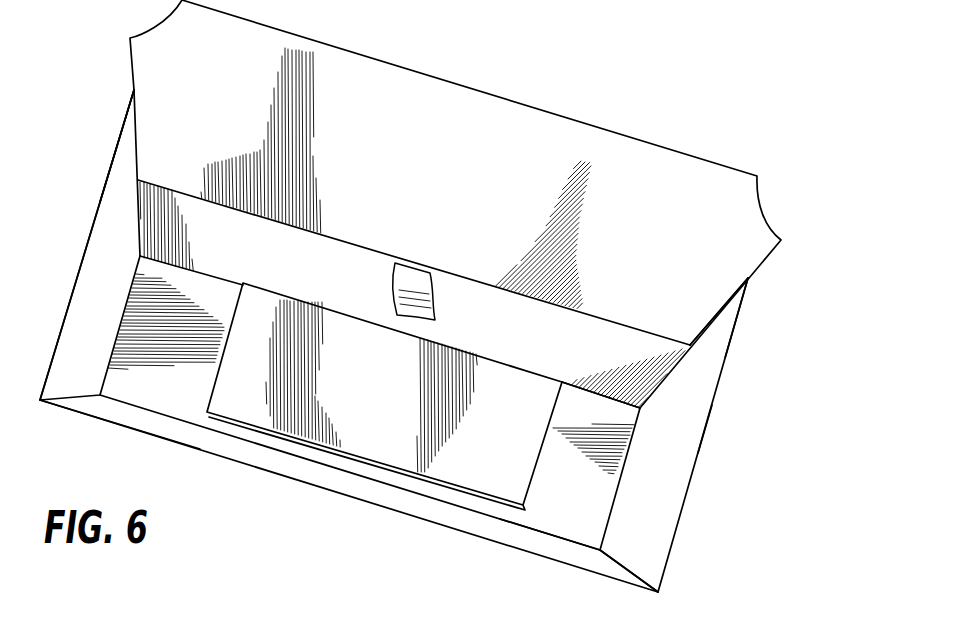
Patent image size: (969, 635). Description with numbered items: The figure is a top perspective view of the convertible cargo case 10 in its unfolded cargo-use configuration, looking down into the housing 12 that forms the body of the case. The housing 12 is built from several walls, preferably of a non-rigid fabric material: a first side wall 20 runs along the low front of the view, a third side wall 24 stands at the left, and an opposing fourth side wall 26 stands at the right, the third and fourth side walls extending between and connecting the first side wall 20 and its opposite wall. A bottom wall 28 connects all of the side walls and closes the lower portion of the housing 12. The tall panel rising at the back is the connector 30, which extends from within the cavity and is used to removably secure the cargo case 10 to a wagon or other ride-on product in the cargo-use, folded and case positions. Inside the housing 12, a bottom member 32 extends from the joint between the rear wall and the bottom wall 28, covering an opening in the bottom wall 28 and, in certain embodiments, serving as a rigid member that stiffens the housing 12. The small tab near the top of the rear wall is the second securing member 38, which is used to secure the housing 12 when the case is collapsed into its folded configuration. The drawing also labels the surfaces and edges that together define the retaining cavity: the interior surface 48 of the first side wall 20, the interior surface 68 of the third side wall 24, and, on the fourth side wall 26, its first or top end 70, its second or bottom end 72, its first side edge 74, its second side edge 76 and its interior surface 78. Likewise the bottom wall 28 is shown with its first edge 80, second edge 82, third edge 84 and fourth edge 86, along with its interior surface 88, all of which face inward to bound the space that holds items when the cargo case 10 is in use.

The convertible cargo case 10 is at (212, 497).
The housing 12 is at (85, 249).
The first side wall 20 is at (326, 476).
The third side wall 24 is at (95, 302).
The fourth side wall 26 is at (685, 502).
The bottom wall 28 is at (207, 293).
The connector 30 is at (703, 185).
The bottom member 32 is at (462, 447).
The second securing member 38 is at (413, 278).
The interior surface 48 is at (143, 421).
The interior surface 68 is at (115, 192).
The first or top end 70 is at (732, 352).
The second or bottom end 72 is at (618, 497).
The first side edge 74 is at (716, 318).
The second side edge 76 is at (628, 564).
The interior surface 78 is at (685, 426).
The first edge 80 is at (541, 532).
The second edge 82 is at (582, 388).
The third edge 84 is at (113, 357).
The fourth edge 86 is at (594, 497).
The interior surface 88 is at (607, 437).